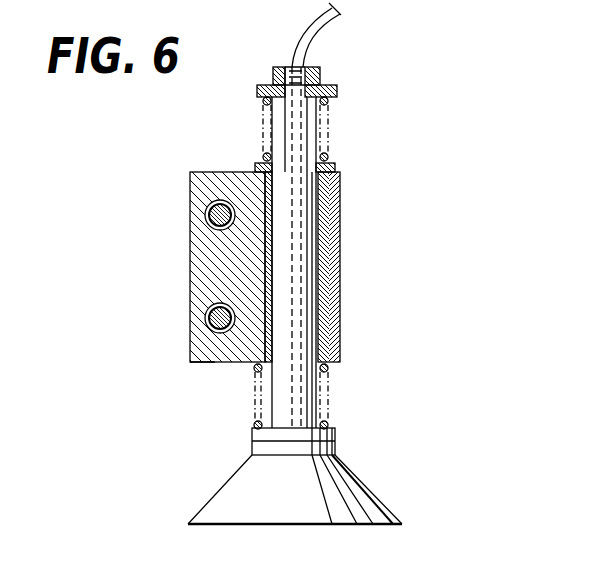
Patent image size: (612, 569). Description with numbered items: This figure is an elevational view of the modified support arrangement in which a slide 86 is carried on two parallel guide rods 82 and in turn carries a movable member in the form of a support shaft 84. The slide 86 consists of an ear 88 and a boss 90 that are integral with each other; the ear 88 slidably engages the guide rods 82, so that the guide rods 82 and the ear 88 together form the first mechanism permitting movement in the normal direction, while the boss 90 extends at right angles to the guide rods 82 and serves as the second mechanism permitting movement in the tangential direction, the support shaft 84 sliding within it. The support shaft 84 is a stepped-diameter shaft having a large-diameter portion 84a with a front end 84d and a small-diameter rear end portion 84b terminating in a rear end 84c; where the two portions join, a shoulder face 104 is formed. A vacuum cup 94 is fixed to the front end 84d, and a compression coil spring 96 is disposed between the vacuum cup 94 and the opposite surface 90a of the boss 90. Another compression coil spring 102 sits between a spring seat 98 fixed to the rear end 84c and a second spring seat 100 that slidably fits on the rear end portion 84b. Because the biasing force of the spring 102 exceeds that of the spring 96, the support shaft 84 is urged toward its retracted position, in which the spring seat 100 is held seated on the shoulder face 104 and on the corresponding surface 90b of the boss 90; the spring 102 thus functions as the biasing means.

The guide rods 82 is at (216, 215).
The support shaft 84 is at (240, 390).
The large-diameter portion 84a is at (302, 308).
The small-diameter rear end portion 84b is at (309, 130).
The rear end 84c is at (292, 64).
The front end 84d is at (278, 418).
The slide 86 is at (200, 163).
The ear 88 is at (200, 250).
The boss 90 is at (340, 208).
The opposite surface of the boss 90a is at (205, 366).
The corresponding surface of the boss 90b is at (220, 170).
The vacuum cup 94 is at (237, 487).
The compression coil spring 96 is at (328, 368).
The spring seat 98 is at (334, 86).
The spring seat 100 is at (333, 166).
The compression coil spring 102 is at (331, 102).
The shoulder face 104 is at (263, 163).